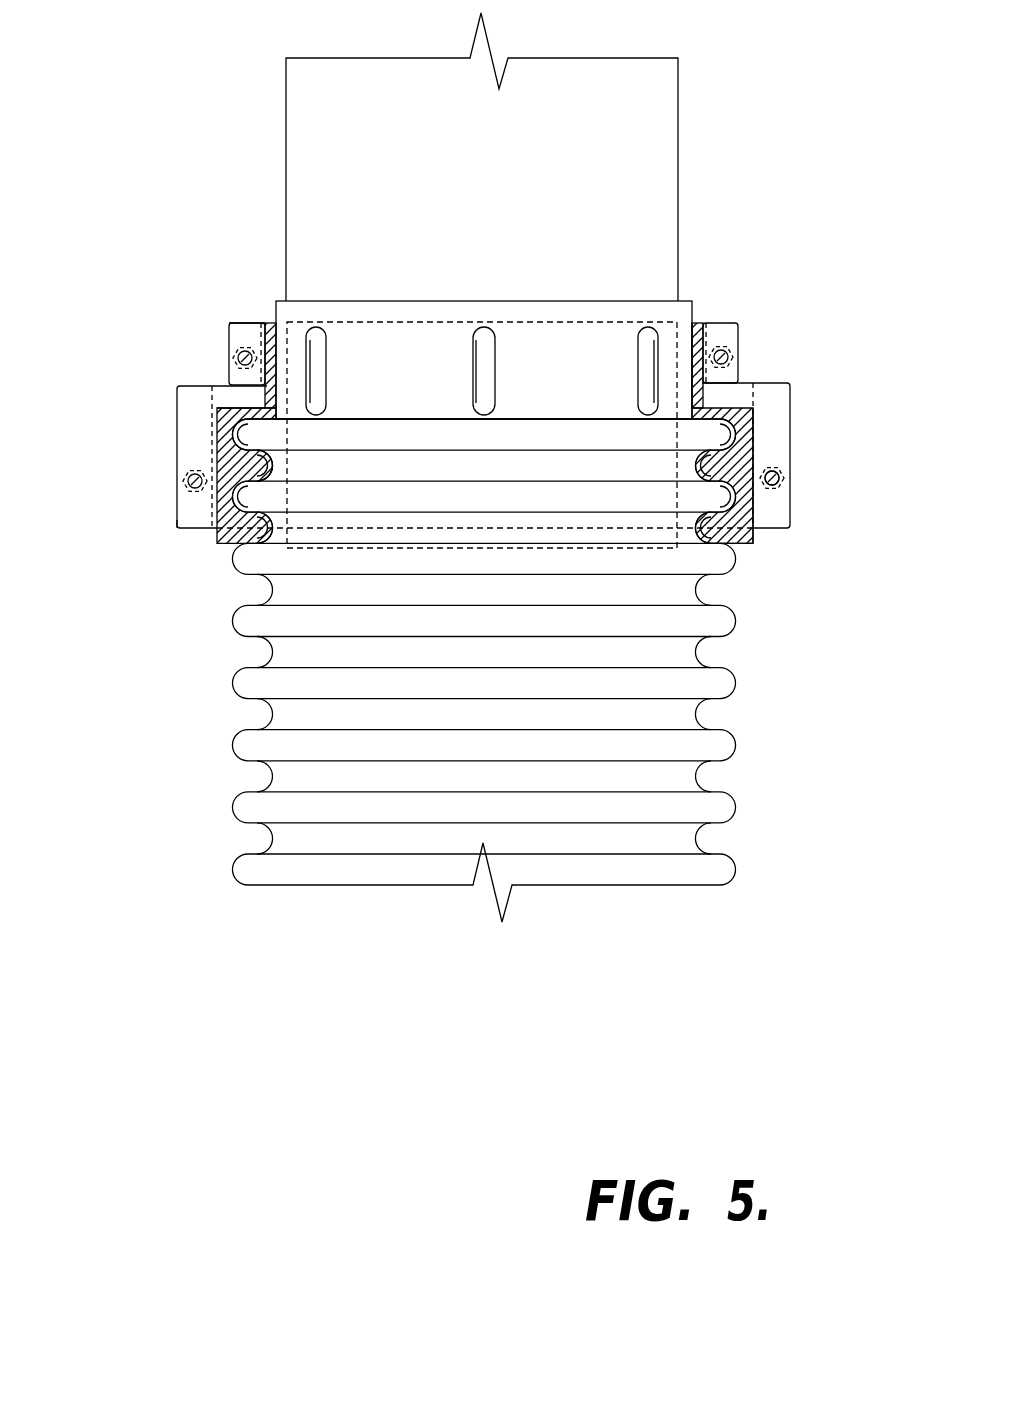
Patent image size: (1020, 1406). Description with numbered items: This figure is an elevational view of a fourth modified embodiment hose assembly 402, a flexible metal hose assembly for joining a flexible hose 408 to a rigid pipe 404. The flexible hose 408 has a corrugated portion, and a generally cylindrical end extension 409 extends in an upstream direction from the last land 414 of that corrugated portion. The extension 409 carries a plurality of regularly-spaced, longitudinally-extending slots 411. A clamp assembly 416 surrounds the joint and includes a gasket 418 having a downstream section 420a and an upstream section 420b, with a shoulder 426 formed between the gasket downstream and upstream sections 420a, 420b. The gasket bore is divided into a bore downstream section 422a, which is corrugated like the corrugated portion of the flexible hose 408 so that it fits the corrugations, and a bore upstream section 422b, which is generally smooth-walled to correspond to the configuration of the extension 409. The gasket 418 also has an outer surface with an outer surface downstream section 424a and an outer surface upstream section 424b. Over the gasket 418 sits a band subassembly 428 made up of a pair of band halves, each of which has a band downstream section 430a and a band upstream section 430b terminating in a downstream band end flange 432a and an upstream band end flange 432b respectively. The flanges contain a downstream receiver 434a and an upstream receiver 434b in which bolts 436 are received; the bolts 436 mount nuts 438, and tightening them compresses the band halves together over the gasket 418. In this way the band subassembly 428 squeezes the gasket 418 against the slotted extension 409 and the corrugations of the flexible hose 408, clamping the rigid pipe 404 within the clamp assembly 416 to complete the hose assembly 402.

The hose assembly 402 is at (150, 95).
The rigid pipe 404 is at (678, 58).
The flexible hose 408 is at (702, 885).
The end extension 409 is at (355, 301).
The slots 411 is at (658, 373).
The last land 414 is at (340, 417).
The clamp assembly 416 is at (752, 320).
The gasket 418 is at (752, 530).
The gasket downstream section 420a is at (220, 545).
The gasket upstream section 420b is at (272, 323).
The bore downstream section 422a is at (263, 488).
The bore upstream section 422b is at (692, 348).
The outer surface downstream section 424a is at (752, 528).
The outer surface upstream section 424b is at (265, 317).
The shoulder 426 is at (237, 407).
The band subassembly 428 is at (790, 383).
The band downstream section 430a is at (176, 508).
The band upstream section 430b is at (230, 340).
The downstream band end flange 432a is at (177, 530).
The upstream band end flange 432b is at (230, 323).
The downstream receiver 434a is at (773, 480).
The upstream receiver 434b is at (722, 358).
The bolts 436 is at (773, 477).
The nuts 438 is at (187, 473).